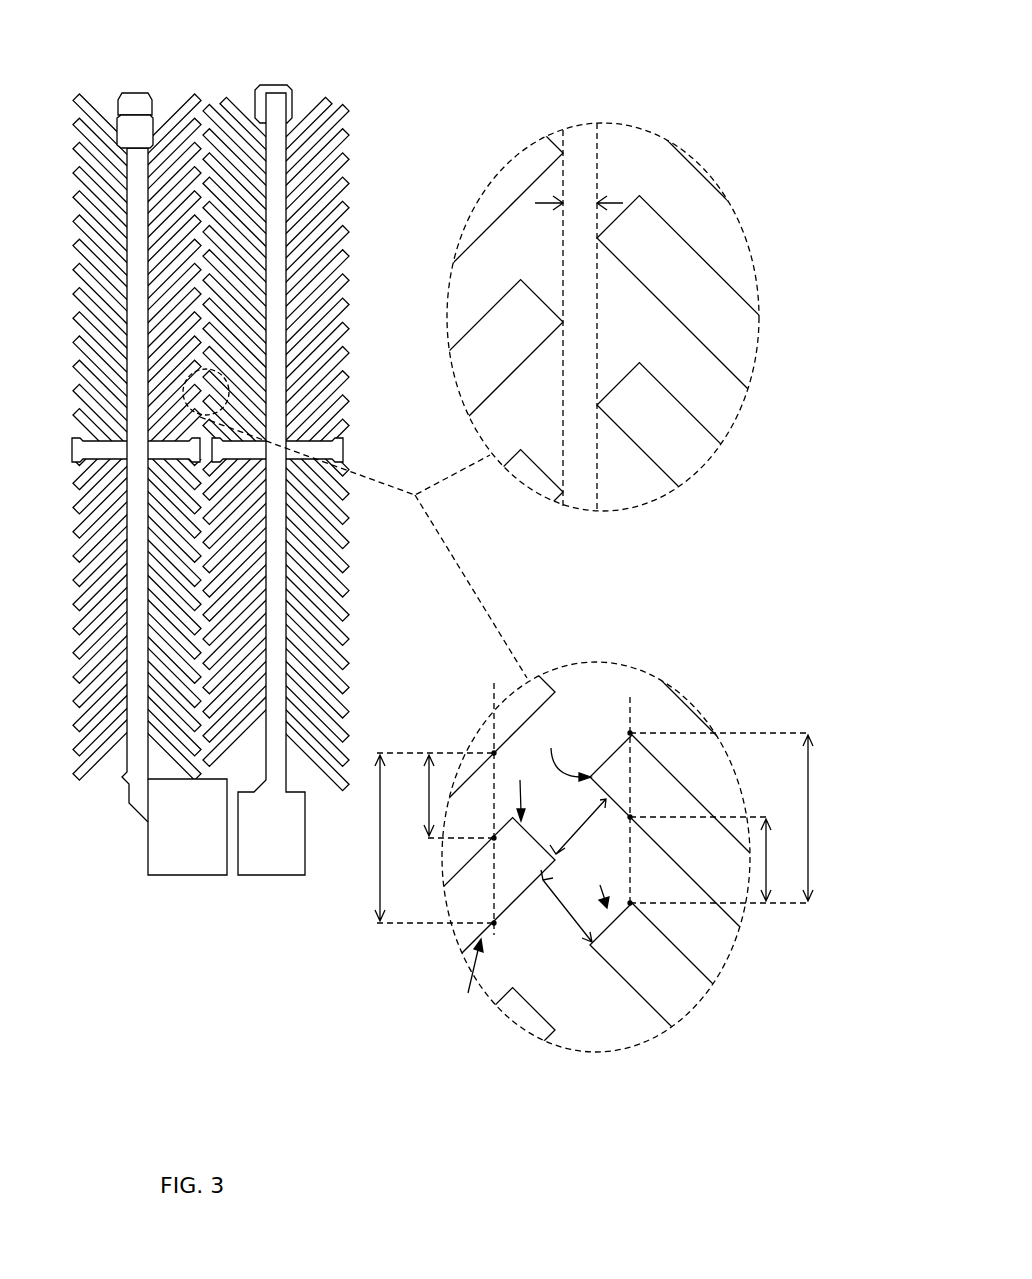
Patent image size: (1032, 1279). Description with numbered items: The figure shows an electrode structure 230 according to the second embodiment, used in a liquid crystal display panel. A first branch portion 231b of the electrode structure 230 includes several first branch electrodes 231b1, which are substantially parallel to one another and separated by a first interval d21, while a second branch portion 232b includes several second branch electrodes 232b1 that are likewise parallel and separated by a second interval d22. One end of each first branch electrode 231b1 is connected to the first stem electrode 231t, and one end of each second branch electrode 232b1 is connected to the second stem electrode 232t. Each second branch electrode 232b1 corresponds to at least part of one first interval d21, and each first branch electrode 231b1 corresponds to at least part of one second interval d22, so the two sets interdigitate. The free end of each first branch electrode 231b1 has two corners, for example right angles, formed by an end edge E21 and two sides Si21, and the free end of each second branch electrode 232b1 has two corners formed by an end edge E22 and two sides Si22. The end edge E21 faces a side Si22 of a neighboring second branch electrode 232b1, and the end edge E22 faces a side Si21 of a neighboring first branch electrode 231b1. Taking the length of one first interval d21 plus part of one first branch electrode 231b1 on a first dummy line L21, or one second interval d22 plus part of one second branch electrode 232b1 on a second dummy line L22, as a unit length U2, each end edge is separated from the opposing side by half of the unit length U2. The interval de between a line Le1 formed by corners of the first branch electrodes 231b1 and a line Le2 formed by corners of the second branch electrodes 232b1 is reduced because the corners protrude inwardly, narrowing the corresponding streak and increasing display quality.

The electrode structure 230 is at (830, 26).
The first stem electrode 231t is at (133, 163).
The second stem electrode 232t is at (275, 148).
The first branch portion 231b is at (492, 107).
The first branch electrode 231b1 is at (492, 330).
The second branch portion 232b is at (847, 540).
The second branch electrode 232b1 is at (700, 455).
The interval de is at (579, 191).
The line formed by corners of the first branch electrodes Le1 is at (549, 335).
The line formed by corners of the second branch electrodes Le2 is at (615, 332).
The first dummy line L21 is at (476, 799).
The second dummy line L22 is at (620, 787).
The first interval d21 is at (435, 795).
The second interval d22 is at (720, 859).
The unit length U2 is at (594, 828).
The end edge E21 is at (519, 789).
The end edge E22 is at (603, 884).
The side Si21 is at (462, 980).
The side Si22 is at (564, 752).